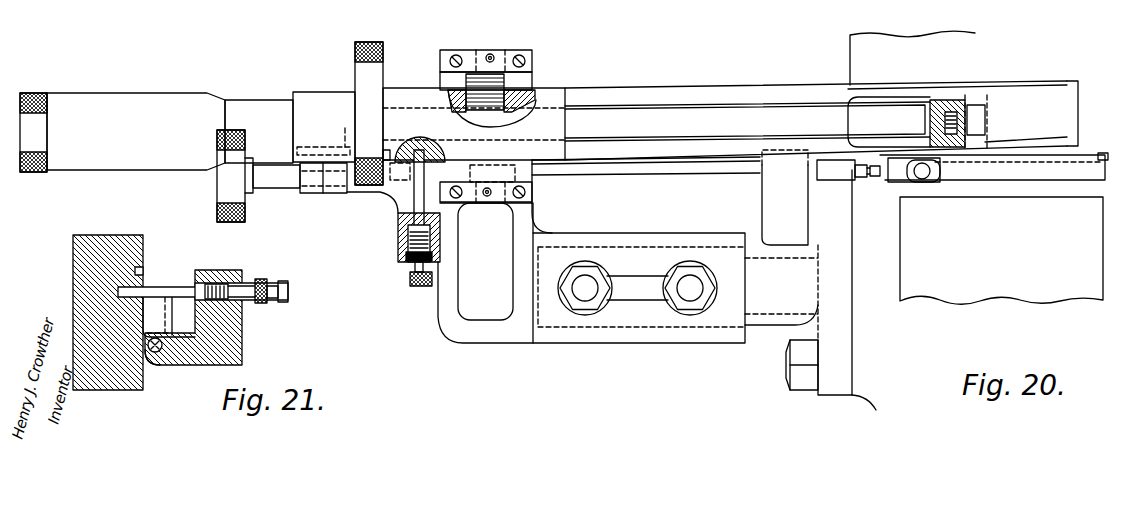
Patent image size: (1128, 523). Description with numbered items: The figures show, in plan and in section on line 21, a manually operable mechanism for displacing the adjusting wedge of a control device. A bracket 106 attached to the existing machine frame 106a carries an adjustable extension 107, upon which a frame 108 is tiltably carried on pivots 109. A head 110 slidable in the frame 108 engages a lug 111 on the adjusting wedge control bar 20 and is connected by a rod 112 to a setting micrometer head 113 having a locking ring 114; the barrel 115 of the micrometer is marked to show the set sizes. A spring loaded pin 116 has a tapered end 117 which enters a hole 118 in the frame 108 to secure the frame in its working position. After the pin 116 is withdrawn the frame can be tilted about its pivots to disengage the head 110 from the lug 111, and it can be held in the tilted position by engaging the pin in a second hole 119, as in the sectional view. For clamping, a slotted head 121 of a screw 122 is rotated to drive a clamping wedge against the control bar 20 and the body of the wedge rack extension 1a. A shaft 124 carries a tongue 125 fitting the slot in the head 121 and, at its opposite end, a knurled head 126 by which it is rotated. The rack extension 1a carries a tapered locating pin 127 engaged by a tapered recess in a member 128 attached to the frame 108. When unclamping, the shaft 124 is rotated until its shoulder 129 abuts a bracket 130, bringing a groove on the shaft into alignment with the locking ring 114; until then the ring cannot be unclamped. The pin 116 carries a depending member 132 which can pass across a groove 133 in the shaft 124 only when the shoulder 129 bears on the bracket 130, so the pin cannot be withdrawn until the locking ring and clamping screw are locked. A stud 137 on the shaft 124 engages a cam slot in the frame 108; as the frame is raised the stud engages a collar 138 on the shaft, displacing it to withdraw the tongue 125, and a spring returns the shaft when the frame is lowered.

In FIG. 20, the wedge rack extension 1a is at (1055, 171).
In FIG. 20, the adjusting wedge control bar 20 is at (1098, 156).
In FIG. 20, the section line 21- 21 is at (418, 165).
In FIG. 20, the bracket 106 is at (758, 321).
In FIG. 20, the machine frame 106a is at (853, 349).
In FIG. 20, the adjustable extension 107 is at (502, 336).
In FIG. 21, the adjustable extension 107 is at (243, 337).
In FIG. 20, the frame 108 is at (668, 95).
In FIG. 20, the pivots 109 is at (490, 48).
In FIG. 20, the head 110 is at (951, 108).
In FIG. 20, the lug 111 is at (980, 115).
In FIG. 20, the rod 112 is at (777, 118).
In FIG. 20, the setting micrometer head 113 is at (147, 108).
In FIG. 20, the locking ring 114 is at (368, 42).
In FIG. 20, the barrel 115 is at (264, 103).
In FIG. 20, the spring loaded pin 116 is at (408, 268).
In FIG. 21, the spring loaded pin 116 is at (250, 284).
In FIG. 20, the tapered end 117 is at (413, 150).
In FIG. 21, the tapered end 117 is at (122, 288).
In FIG. 20, the hole 118 is at (430, 147).
In FIG. 21, the hole 118 is at (76, 237).
In FIG. 21, the second hole 119 is at (138, 267).
In FIG. 20, the slotted head 121 is at (878, 180).
In FIG. 20, the screw 122 is at (893, 183).
In FIG. 20, the shaft 124 is at (657, 166).
In FIG. 21, the shaft 124 is at (160, 353).
In FIG. 20, the tongue 125 is at (857, 178).
In FIG. 20, the knurled head 126 is at (225, 183).
In FIG. 20, the tapered locating pin 127 is at (926, 178).
In FIG. 20, the member 128 is at (939, 163).
In FIG. 20, the shoulder 129 is at (835, 168).
In FIG. 20, the bracket 130 is at (768, 181).
In FIG. 21, the depending member 132 is at (160, 298).
In FIG. 21, the groove 133 is at (147, 366).
In FIG. 20, the stud 137 is at (335, 148).
In FIG. 20, the collar 138 is at (314, 194).